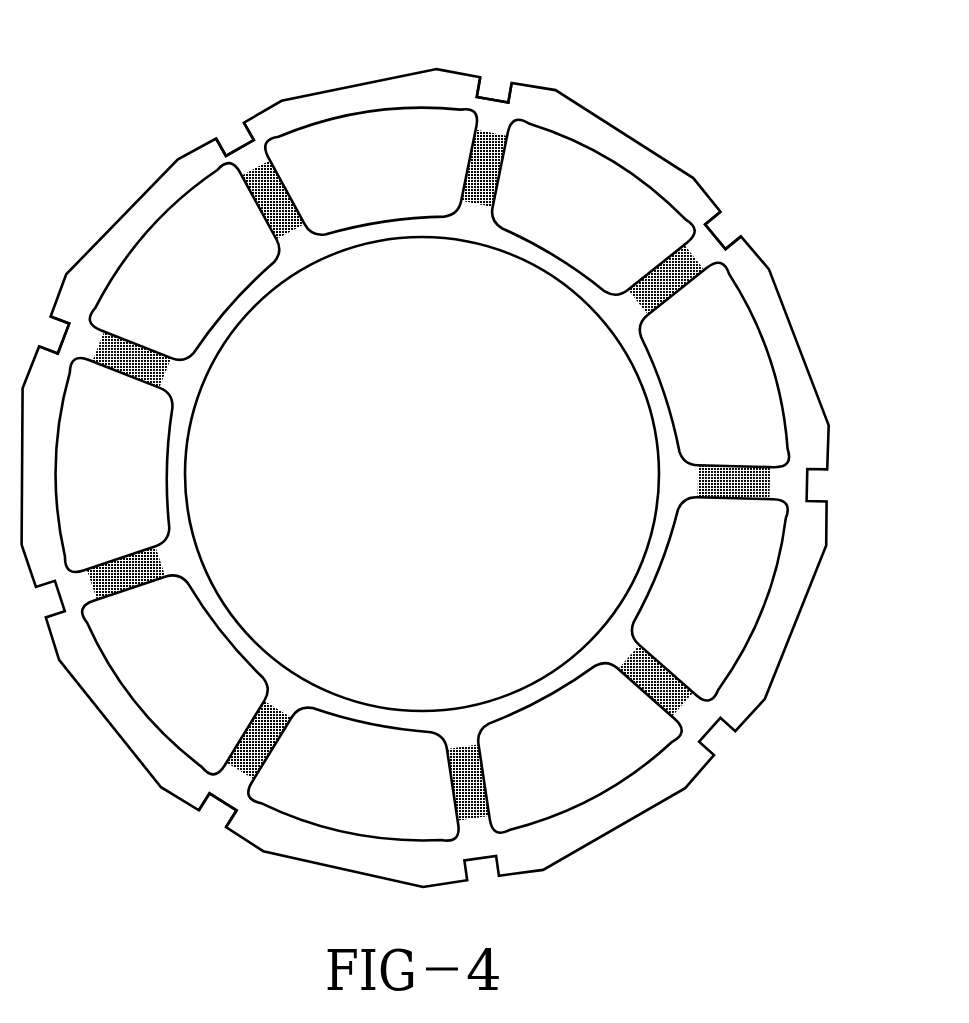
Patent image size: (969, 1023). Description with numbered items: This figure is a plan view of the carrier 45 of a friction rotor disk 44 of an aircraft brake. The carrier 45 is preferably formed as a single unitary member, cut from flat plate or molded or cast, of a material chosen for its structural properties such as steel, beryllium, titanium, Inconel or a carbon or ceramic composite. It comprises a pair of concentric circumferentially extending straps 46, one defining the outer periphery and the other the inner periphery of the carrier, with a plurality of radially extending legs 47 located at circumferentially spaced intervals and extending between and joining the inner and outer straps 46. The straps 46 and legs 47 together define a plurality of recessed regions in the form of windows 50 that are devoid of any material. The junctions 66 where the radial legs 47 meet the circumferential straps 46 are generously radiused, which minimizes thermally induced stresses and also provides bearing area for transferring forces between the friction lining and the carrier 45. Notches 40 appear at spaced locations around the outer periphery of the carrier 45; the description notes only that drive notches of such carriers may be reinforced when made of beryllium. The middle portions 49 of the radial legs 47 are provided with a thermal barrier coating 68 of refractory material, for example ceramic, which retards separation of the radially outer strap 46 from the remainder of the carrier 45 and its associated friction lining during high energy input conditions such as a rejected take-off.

The notch 40 is at (496, 84).
The friction rotor disk 44 is at (445, 448).
The carrier 45 is at (784, 303).
The circumferentially extending strap 46 is at (612, 126).
The radially extending leg 47 is at (286, 194).
The middle portion 49 is at (258, 206).
The window 50 is at (758, 390).
The junction 66 is at (165, 538).
The thermal barrier coating 68 is at (275, 221).